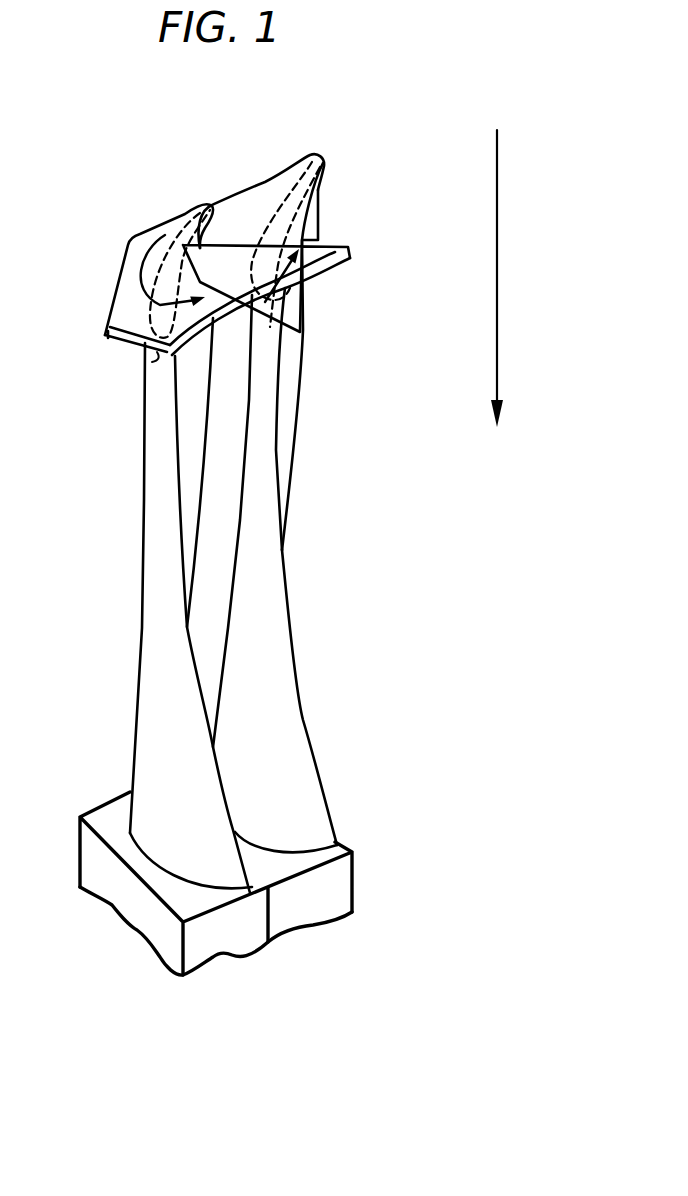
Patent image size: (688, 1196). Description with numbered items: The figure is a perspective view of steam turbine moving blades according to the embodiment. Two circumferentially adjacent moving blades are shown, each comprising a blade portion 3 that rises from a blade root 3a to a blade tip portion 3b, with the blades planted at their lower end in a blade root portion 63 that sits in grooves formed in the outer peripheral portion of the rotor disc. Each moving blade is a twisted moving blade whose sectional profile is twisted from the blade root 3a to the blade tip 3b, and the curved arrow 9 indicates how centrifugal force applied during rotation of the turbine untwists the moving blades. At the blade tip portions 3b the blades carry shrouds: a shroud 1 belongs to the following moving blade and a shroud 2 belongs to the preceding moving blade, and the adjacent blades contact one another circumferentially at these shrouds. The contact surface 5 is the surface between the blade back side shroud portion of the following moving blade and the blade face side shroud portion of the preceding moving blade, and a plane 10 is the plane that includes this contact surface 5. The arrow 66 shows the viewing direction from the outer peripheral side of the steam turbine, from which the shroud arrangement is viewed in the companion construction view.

The shroud of a following moving blade 1 is at (326, 242).
The shroud of a preceding moving blade 2 is at (120, 323).
The blade portion 3 is at (257, 568).
The blade root 3a is at (293, 800).
The blade tip portion 3b is at (283, 180).
The contact surface 5 is at (217, 290).
The untwisting of the moving blade 9 is at (137, 270).
The plane including the contact surface 10 is at (298, 297).
The blade root portion 63 is at (337, 883).
The viewing direction 66 is at (497, 259).